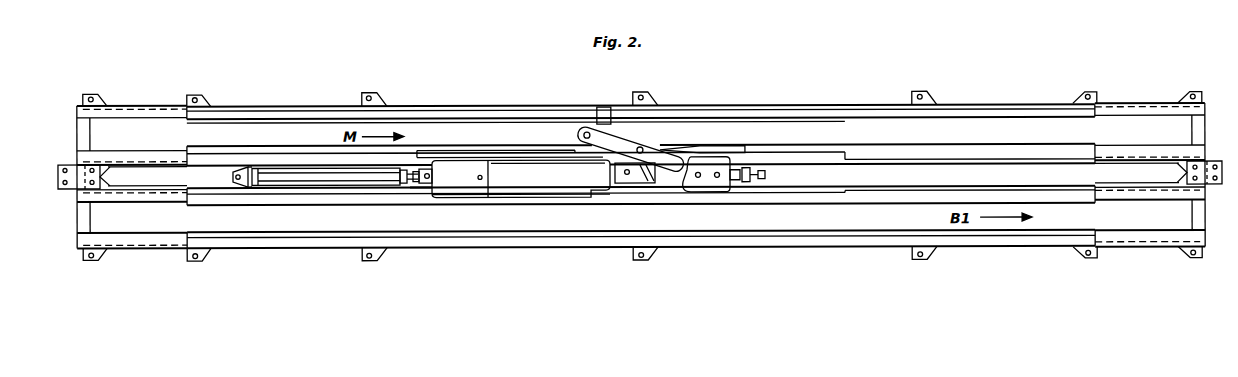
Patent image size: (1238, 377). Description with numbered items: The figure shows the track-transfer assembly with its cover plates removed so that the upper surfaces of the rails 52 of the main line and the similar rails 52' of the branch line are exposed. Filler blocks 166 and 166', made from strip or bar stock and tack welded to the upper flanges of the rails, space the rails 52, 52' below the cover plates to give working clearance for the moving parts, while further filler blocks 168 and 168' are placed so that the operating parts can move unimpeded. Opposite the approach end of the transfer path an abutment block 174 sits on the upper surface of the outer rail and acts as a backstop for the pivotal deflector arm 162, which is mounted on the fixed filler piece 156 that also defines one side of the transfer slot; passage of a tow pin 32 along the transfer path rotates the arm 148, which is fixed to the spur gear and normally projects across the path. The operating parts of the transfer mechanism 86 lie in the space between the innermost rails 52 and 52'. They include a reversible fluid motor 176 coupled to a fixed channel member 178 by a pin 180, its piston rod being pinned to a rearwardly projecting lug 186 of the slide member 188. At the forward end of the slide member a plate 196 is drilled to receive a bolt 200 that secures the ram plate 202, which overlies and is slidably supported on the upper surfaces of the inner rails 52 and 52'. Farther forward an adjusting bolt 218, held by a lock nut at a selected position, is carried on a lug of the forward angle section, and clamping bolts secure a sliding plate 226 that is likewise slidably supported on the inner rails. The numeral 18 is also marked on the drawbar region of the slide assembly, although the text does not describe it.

The rails 52 is at (640, 163).
The rails 52' is at (641, 231).
The filler block 166 is at (641, 103).
The filler block 166' is at (641, 252).
The filler block 168 is at (641, 135).
The filler block 168' is at (641, 208).
The abutment block 174 is at (600, 118).
The deflector arm 162 is at (638, 141).
The tow pin 32 is at (583, 135).
The filler piece 156 is at (664, 150).
The sliding plate 226 is at (726, 158).
The adjusting bolt 218 is at (766, 175).
The arm 148 is at (633, 186).
The drawbar 18 is at (411, 163).
The plate 196 is at (466, 159).
The bolt 200 is at (482, 177).
The transfer mechanism 86 is at (466, 182).
The slide member 188 is at (527, 177).
The ram plate 202 is at (572, 181).
The reversible fluid motor 176 is at (312, 186).
The channel member 178 is at (232, 177).
The pin 180 is at (238, 187).
The lug 186 is at (421, 186).